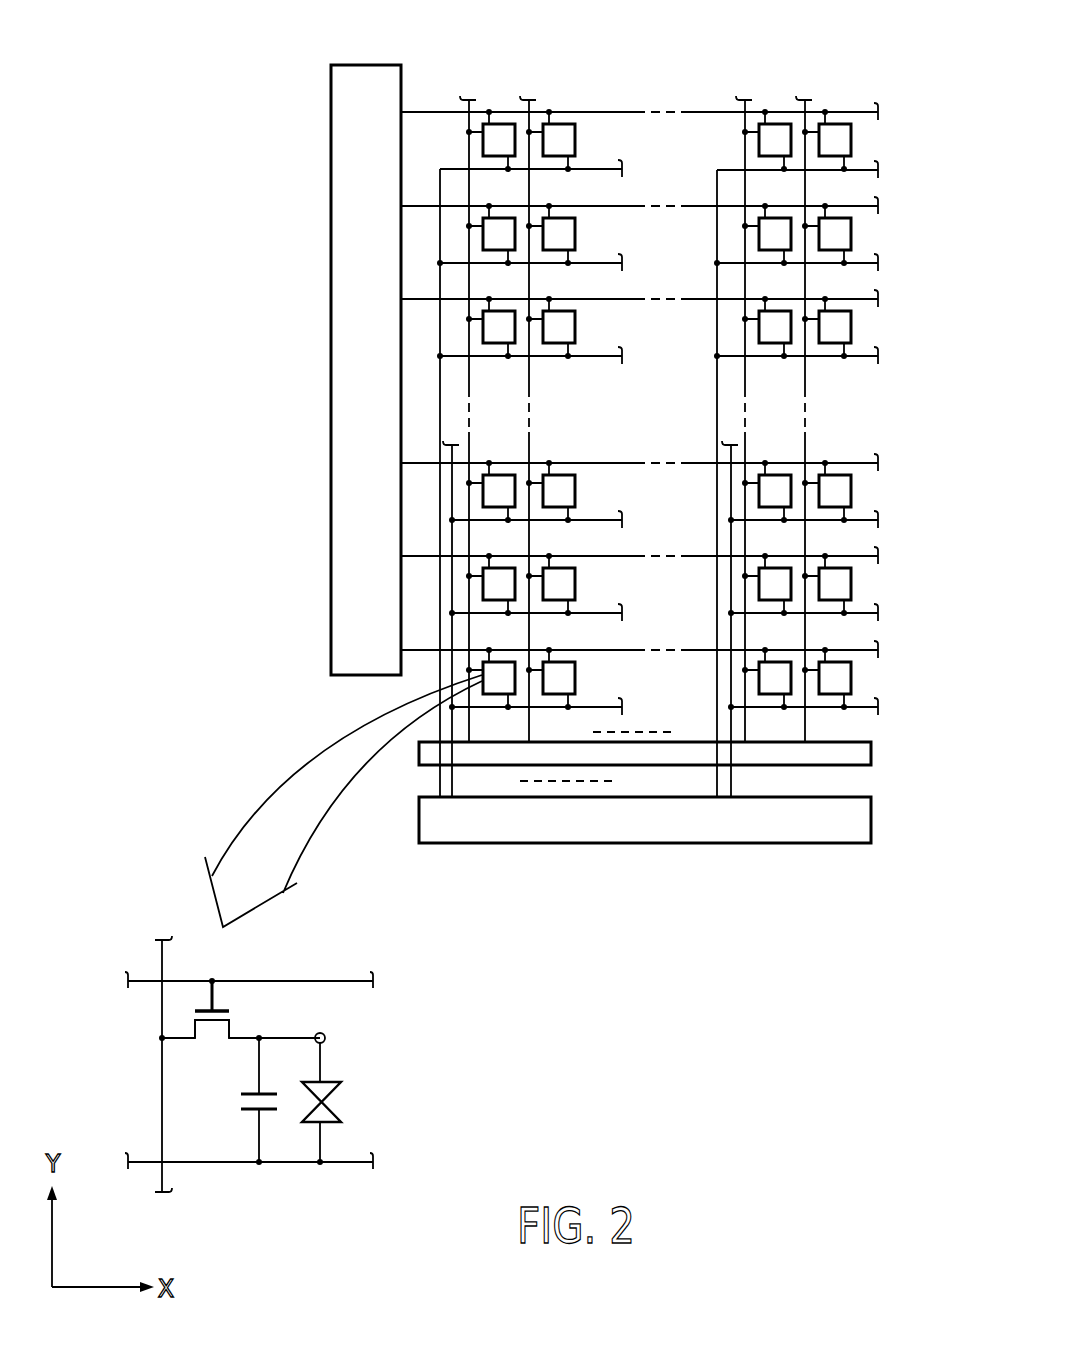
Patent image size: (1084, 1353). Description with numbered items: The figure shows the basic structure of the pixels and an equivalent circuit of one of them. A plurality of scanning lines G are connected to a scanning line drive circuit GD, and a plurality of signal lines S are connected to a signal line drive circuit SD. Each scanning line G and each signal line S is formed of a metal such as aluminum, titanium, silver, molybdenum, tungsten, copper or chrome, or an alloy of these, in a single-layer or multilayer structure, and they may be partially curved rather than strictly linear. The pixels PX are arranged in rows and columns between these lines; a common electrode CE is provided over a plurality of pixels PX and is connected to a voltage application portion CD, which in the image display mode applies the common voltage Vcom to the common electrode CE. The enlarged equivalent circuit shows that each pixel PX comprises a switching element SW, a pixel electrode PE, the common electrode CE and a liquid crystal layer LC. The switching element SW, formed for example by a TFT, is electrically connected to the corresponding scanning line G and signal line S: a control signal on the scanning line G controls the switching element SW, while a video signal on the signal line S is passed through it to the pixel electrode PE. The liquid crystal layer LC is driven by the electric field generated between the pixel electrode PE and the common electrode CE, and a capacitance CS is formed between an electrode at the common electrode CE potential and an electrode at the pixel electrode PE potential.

The scanning line drive circuit GD is at (372, 65).
The signal line S is at (466, 100).
The scanning line G is at (882, 106).
The pixel PX is at (578, 131).
The common electrode CE is at (762, 170).
The signal line drive circuit SD is at (872, 752).
The voltage application portion CD is at (872, 817).
The switching element SW is at (240, 1024).
The pixel electrode PE is at (330, 1038).
The capacitance CS is at (232, 1099).
The liquid crystal layer LC is at (346, 1101).